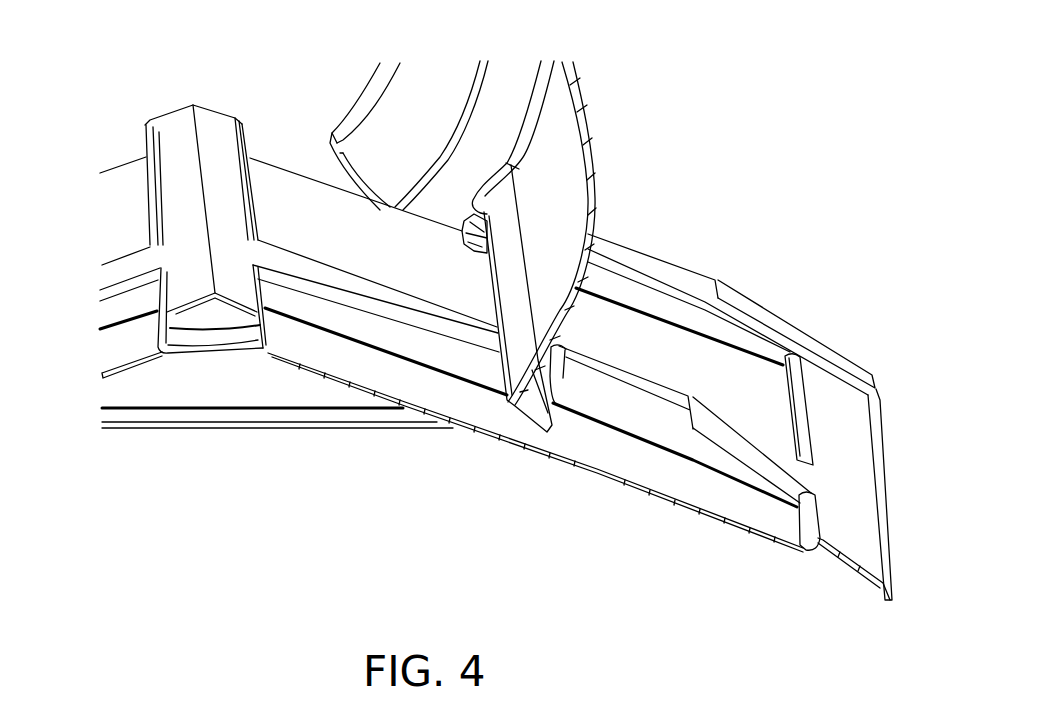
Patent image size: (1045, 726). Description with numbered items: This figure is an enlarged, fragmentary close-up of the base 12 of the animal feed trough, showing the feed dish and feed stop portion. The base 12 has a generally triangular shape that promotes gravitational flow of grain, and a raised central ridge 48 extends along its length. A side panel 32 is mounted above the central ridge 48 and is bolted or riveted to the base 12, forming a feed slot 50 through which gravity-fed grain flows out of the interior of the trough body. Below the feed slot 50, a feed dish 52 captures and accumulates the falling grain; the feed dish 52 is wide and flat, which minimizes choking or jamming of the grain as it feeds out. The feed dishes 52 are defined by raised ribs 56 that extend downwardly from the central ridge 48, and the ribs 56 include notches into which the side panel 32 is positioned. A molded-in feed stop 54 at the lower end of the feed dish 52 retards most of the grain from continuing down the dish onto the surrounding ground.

The base 12 is at (757, 512).
The side panel 32 is at (567, 147).
The raised central ridge 48 is at (175, 125).
The feed slot 50 is at (510, 292).
The feed dish 52 is at (117, 213).
The feed stop 54 is at (862, 468).
The raised rib 56 is at (112, 275).